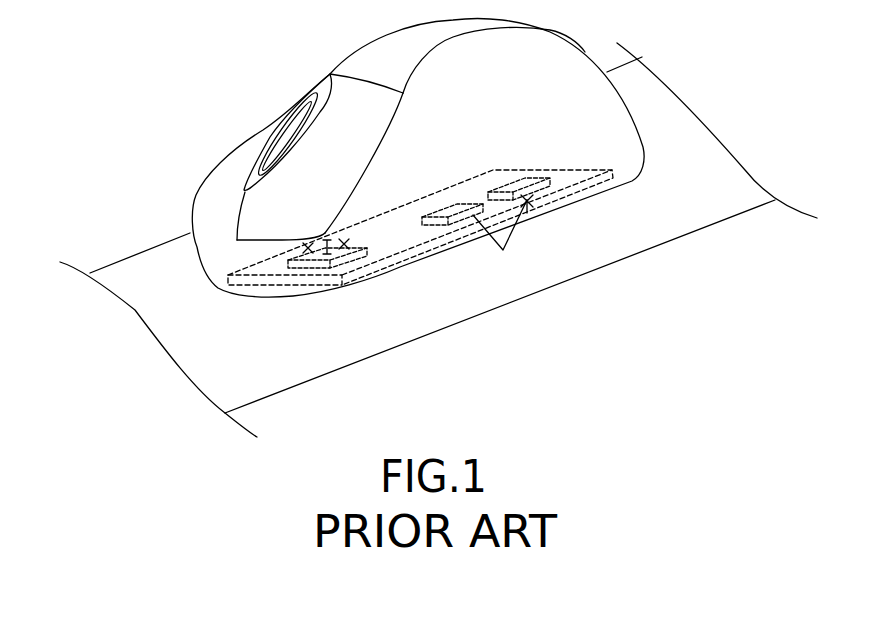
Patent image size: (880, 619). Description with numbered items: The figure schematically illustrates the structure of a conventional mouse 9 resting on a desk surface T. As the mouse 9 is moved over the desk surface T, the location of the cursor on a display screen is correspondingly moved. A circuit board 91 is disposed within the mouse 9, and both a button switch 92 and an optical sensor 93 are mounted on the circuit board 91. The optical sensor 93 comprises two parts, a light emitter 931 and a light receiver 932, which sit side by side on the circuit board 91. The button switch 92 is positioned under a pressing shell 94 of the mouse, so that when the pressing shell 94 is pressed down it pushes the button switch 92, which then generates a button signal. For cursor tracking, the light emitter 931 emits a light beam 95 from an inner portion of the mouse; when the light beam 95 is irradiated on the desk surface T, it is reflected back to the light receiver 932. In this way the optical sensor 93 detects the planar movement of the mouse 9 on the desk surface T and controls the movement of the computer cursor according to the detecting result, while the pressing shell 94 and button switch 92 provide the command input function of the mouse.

The mouse 9 is at (335, 36).
The desk surface T is at (162, 262).
The circuit board 91 is at (577, 178).
The button switch 92 is at (350, 257).
The optical sensor 93 is at (514, 168).
The light emitter 931 is at (444, 203).
The light receiver 932 is at (523, 178).
The pressing shell 94 is at (290, 210).
The light beam 95 is at (487, 246).